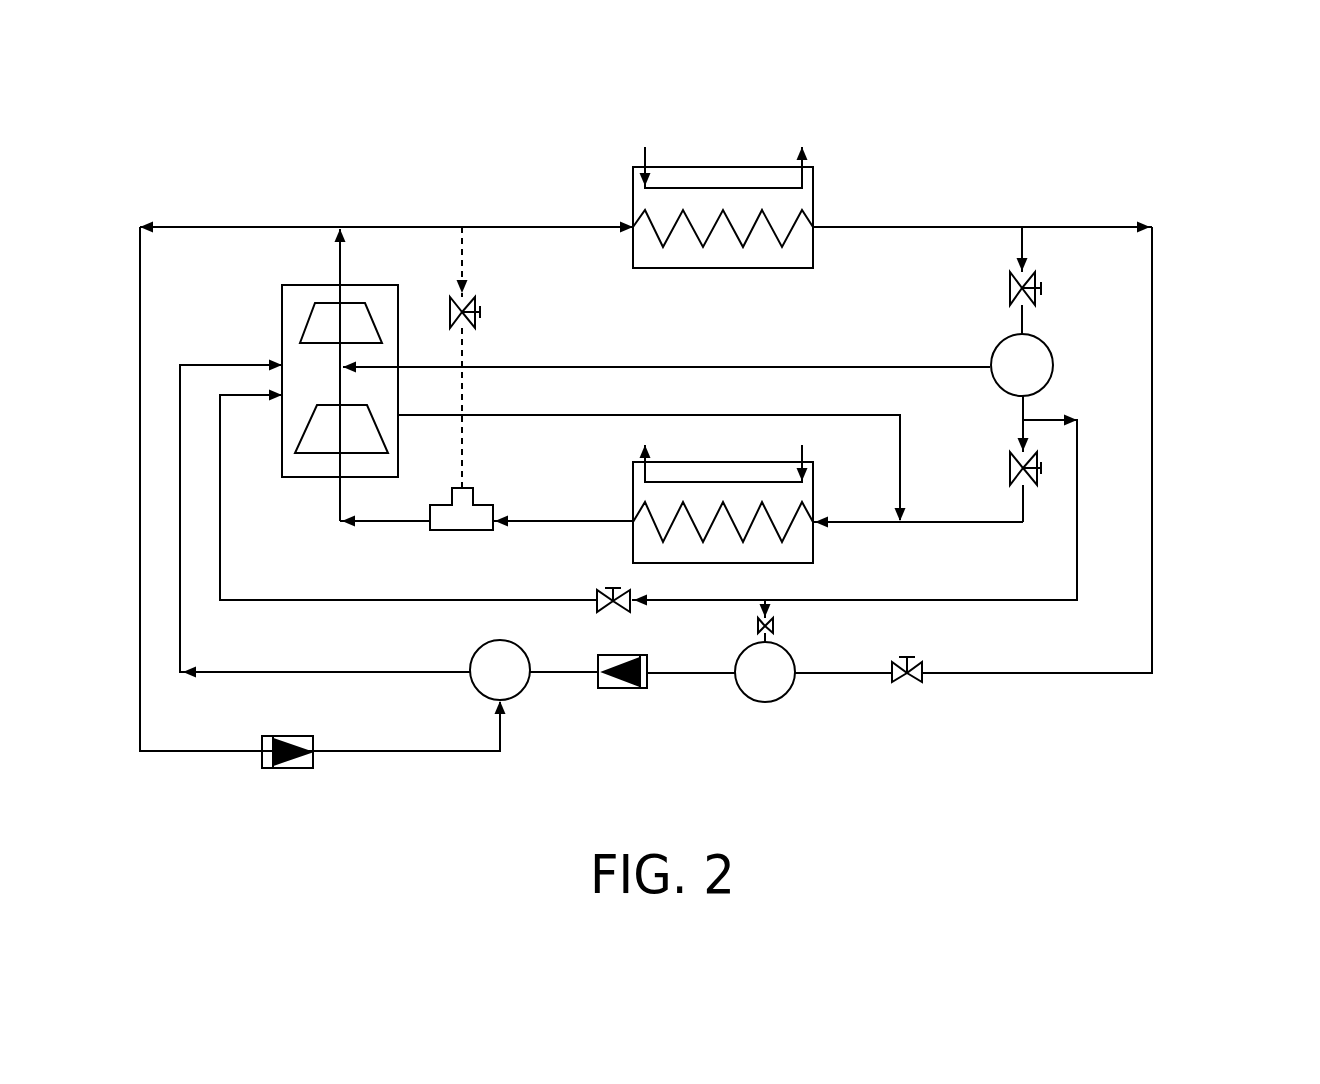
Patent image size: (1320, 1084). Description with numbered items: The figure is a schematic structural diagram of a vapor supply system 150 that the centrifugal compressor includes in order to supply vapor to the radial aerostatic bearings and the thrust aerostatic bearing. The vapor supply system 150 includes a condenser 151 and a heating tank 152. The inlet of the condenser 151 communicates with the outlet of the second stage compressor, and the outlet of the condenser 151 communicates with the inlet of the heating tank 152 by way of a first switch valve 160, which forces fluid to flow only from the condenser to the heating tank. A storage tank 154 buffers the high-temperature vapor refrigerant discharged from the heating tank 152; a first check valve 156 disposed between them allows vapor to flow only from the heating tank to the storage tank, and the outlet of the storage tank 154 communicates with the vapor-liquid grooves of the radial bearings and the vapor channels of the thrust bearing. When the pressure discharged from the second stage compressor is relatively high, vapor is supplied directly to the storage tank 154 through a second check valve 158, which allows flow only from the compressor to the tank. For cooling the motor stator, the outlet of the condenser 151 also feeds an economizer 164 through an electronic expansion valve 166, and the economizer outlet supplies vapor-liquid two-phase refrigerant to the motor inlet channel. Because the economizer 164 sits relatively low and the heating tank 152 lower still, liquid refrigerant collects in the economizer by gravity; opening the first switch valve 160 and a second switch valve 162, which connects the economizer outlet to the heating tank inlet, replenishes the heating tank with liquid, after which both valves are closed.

The vapor supply system 150 is at (1160, 198).
The condenser 151 is at (800, 197).
The heating tank 152 is at (770, 674).
The storage tank 154 is at (502, 677).
The first check valve 156 is at (646, 690).
The second check valve 158 is at (310, 738).
The first switch valve 160 is at (918, 680).
The second switch valve 162 is at (772, 627).
The economizer 164 is at (1027, 360).
The electronic expansion valve 166 is at (1030, 275).